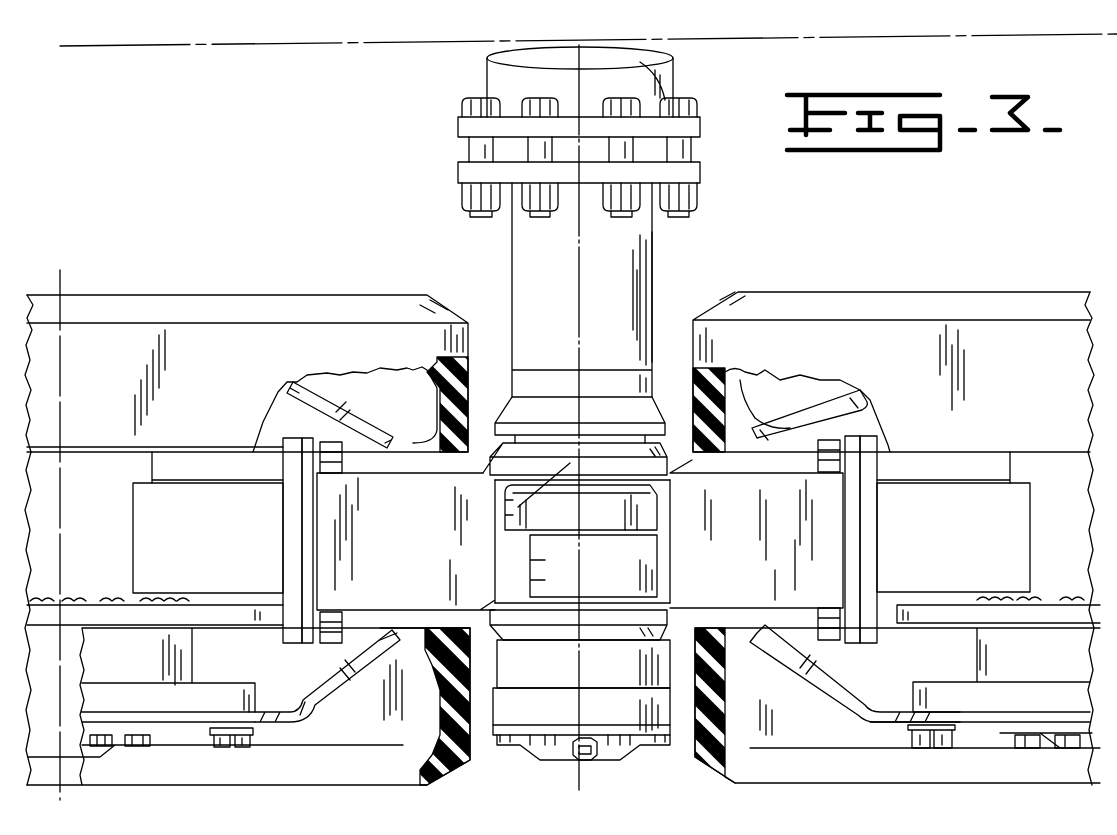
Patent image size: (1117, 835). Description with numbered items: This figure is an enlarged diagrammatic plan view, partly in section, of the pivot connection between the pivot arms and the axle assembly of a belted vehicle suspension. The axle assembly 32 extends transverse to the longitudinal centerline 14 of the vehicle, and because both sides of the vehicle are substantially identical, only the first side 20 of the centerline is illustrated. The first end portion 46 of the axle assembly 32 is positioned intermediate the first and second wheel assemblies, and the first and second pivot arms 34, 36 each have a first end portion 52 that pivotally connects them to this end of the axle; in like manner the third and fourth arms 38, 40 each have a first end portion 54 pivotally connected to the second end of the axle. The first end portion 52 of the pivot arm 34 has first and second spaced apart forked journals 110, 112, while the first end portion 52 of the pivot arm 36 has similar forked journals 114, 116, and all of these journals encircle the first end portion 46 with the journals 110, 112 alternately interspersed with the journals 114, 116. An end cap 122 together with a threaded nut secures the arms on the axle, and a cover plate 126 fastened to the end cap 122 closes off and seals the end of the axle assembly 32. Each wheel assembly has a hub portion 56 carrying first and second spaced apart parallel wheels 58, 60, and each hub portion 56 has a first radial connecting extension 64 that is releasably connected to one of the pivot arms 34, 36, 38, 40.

The longitudinal centerline 14 is at (402, 44).
The first side 20 is at (413, 190).
The axle assembly 32 is at (660, 276).
The first end portion 46 is at (571, 320).
The first end portion 52 is at (557, 447).
The first end portion 54 is at (575, 538).
The pivot arm 36 is at (437, 547).
The pivot arm 40 is at (406, 541).
The pivot arm 34 is at (804, 542).
The pivot arm 38 is at (756, 534).
The first forked journal 110 is at (617, 615).
The second forked journal 112 is at (605, 507).
The first forked journal 114 is at (565, 572).
The second forked journal 116 is at (505, 508).
The end cap 122 is at (628, 719).
The cover plate 126 is at (610, 754).
The hub portion 56 is at (112, 530).
The first wheel 58 is at (297, 712).
The second wheel 60 is at (413, 430).
The first radial connecting extension 64 is at (229, 545).